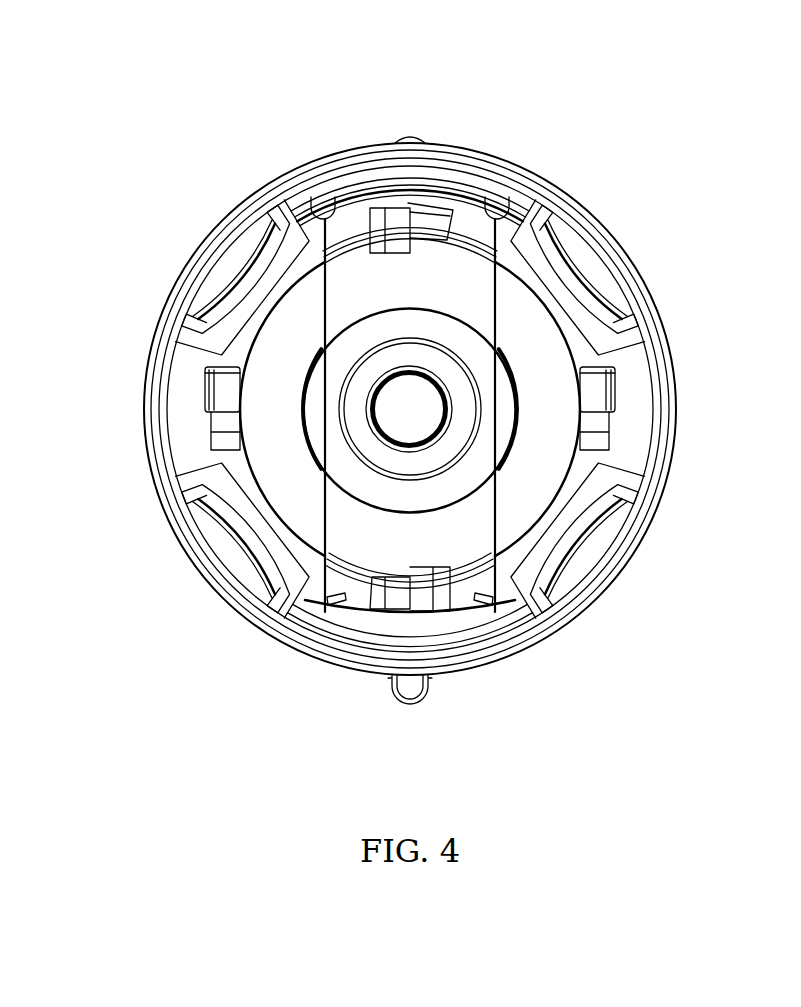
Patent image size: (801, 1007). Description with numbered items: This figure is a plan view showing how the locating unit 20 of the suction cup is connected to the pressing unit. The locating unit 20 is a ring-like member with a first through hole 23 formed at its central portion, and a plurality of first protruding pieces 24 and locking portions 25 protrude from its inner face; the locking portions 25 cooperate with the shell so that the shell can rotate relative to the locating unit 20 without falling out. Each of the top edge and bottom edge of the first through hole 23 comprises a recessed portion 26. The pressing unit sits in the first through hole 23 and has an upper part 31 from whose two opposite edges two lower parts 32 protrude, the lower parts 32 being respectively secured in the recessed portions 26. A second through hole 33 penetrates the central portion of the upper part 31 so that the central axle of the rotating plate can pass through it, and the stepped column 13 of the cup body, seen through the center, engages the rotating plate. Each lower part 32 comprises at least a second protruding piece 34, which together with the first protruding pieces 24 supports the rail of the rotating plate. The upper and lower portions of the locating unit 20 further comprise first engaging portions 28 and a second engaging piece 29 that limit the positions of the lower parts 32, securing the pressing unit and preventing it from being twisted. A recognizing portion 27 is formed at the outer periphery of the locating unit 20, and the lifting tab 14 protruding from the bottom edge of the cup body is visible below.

The stepped column 13 is at (428, 393).
The lifting tab 14 is at (430, 692).
The locating unit 20 is at (668, 460).
The first through hole 23 is at (263, 494).
The first protruding pieces 24 is at (213, 388).
The locking portions 25 is at (612, 293).
The recessed portion 26 is at (515, 587).
The recognizing portion 27 is at (403, 138).
The first engaging portions 28 is at (502, 201).
The second engaging piece 29 is at (338, 610).
The upper part 31 is at (336, 384).
The lower parts 32 is at (343, 197).
The second through hole 33 is at (451, 424).
The second protruding piece 34 is at (428, 212).